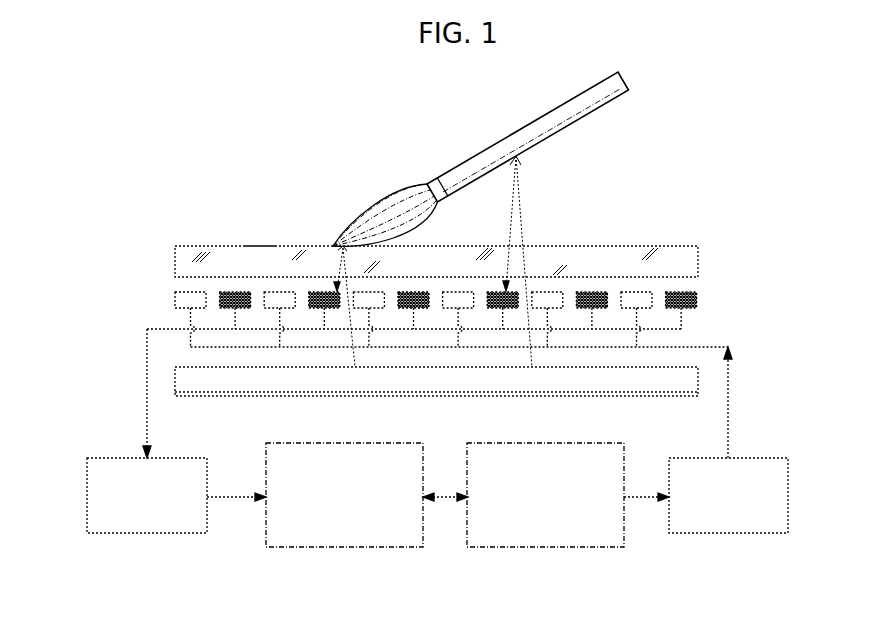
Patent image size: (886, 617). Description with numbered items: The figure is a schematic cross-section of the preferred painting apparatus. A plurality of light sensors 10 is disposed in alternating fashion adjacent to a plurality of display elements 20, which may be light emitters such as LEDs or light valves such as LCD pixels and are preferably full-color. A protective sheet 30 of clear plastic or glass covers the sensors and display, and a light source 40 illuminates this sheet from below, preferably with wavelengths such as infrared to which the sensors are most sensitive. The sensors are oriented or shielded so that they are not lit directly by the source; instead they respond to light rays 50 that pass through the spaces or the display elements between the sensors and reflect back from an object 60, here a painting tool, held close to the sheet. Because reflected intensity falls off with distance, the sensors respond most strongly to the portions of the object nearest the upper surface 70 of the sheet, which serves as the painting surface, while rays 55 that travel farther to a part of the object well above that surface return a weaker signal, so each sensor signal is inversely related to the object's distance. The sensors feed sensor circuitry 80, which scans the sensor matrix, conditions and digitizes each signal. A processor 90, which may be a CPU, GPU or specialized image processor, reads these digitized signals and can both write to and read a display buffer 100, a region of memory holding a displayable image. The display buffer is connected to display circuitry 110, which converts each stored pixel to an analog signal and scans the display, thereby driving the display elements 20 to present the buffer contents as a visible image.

The light sensors 10 is at (700, 302).
The display elements 20 is at (182, 300).
The protective sheet 30 is at (698, 257).
The light source 40 is at (683, 386).
The light rays 50 is at (324, 254).
The light rays 55 is at (530, 241).
The object 60 is at (580, 122).
The upper surface 70 is at (258, 246).
The sensor circuitry 80 is at (95, 503).
The processor 90 is at (278, 540).
The display buffer 100 is at (597, 540).
The display circuitry 110 is at (780, 500).